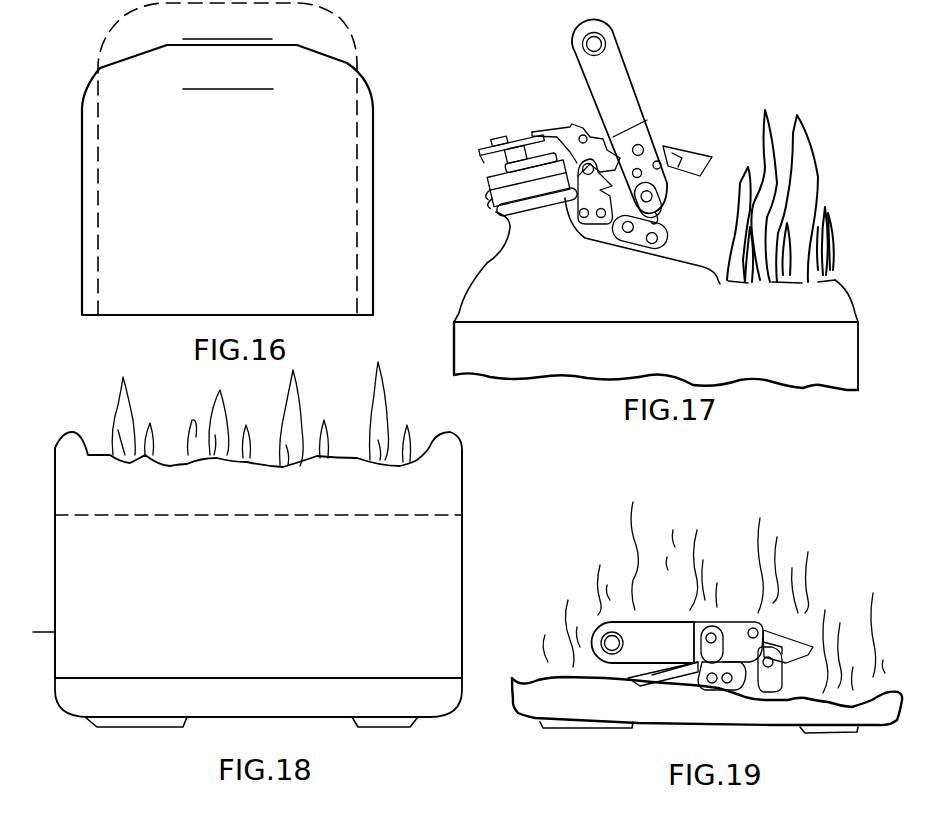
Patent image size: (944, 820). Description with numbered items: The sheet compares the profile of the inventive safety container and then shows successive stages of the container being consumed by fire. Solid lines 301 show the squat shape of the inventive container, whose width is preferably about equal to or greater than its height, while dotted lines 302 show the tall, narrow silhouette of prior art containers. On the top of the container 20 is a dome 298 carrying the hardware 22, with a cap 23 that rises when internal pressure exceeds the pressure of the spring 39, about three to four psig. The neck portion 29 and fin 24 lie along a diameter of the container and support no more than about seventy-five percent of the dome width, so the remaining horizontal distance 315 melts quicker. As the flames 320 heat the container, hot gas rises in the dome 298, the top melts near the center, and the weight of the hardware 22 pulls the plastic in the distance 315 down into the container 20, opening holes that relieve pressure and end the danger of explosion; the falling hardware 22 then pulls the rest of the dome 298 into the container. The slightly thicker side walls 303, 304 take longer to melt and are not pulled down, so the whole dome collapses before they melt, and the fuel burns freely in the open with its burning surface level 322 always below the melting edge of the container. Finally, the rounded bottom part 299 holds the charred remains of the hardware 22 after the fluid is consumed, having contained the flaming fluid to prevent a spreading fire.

In FIG. 17, the container 20 is at (668, 360).
In FIG. 18, the container 20 is at (290, 502).
In FIG. 17, the hardware 22 is at (663, 124).
In FIG. 19, the hardware 22 is at (643, 620).
In FIG. 17, the cap 23 is at (488, 178).
In FIG. 17, the fin 24 is at (683, 238).
In FIG. 17, the neck portion 29 is at (496, 206).
In FIG. 17, the spring 39 is at (535, 131).
In FIG. 17, the dome 298 is at (459, 300).
In FIG. 19, the rounded bottom part 299 is at (532, 710).
In FIG. 16, the solid lines 301 is at (377, 118).
In FIG. 16, the dotted lines 302 is at (352, 42).
In FIG. 18, the side wall 303 is at (47, 600).
In FIG. 18, the side wall 304 is at (462, 620).
In FIG. 17, the horizontal distance 315 is at (848, 303).
In FIG. 17, the flames 320 is at (832, 181).
In FIG. 18, the burning surface level 322 is at (428, 515).